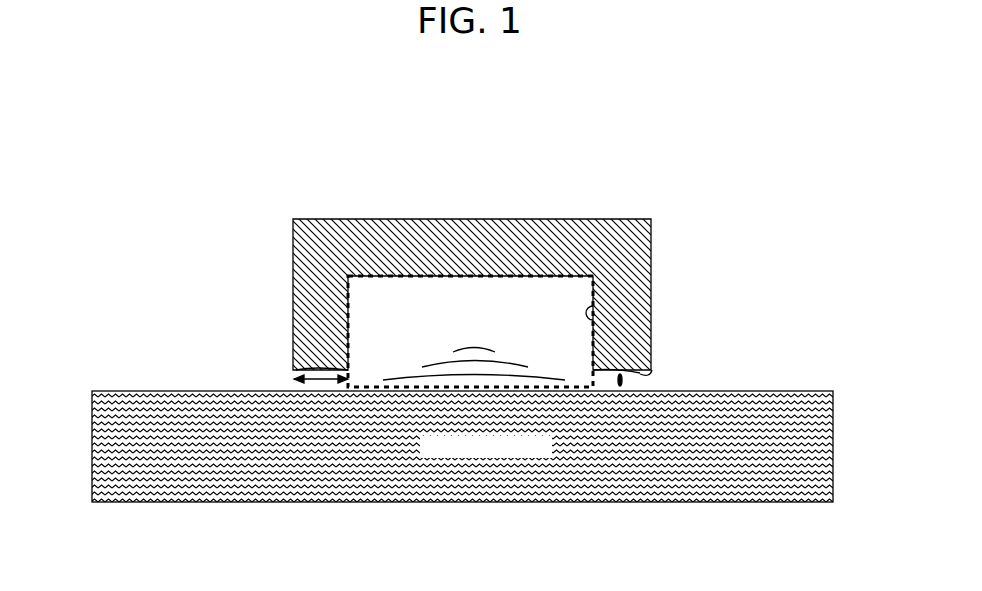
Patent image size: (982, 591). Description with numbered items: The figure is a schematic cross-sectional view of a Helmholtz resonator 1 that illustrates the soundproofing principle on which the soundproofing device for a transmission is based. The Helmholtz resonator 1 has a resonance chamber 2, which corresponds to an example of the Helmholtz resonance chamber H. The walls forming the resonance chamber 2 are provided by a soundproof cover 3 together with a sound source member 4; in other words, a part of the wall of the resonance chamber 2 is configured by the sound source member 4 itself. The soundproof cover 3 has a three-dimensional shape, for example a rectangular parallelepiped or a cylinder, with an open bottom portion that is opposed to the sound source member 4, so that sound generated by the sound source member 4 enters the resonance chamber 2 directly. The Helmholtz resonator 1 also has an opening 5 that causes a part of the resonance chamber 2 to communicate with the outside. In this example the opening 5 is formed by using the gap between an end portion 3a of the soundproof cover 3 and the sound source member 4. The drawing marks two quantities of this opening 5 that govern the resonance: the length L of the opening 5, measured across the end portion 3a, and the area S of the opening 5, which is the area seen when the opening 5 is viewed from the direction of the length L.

The Helmholtz resonator 1 is at (500, 347).
The resonance chamber 2 is at (560, 305).
The soundproof cover 3 is at (458, 212).
The end portion of the soundproof cover 3a is at (640, 374).
The sound source member 4 is at (710, 483).
The opening 5 is at (313, 368).
The Helmholtz resonance chamber H is at (595, 320).
The length of the opening L is at (320, 385).
The area of the opening S is at (625, 386).